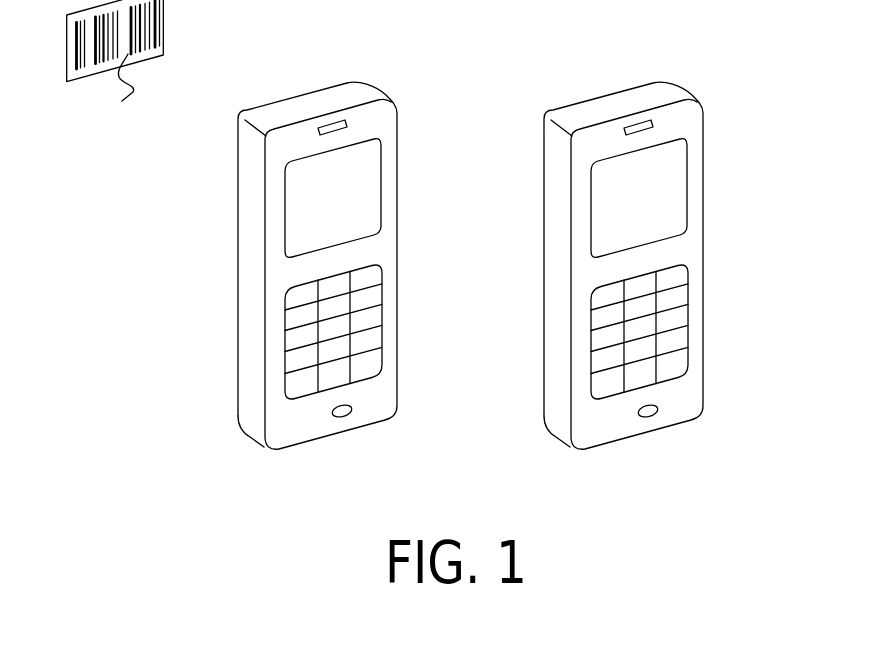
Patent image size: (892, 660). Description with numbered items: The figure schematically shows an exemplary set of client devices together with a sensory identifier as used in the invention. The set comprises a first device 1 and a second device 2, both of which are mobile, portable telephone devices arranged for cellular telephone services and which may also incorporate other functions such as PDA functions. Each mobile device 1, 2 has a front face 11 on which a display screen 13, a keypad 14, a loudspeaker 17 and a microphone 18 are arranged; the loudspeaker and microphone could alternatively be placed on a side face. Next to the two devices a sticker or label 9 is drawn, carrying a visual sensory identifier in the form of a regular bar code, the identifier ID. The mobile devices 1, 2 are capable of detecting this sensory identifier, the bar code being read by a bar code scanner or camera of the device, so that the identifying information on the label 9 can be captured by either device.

The first device 1 is at (350, 272).
The second device 2 is at (669, 225).
The sticker or label 9 is at (163, 15).
The front face 11 is at (387, 400).
The display screen 13 is at (363, 225).
The keypad 14 is at (363, 338).
The loudspeaker 17 is at (348, 125).
The microphone 18 is at (345, 417).